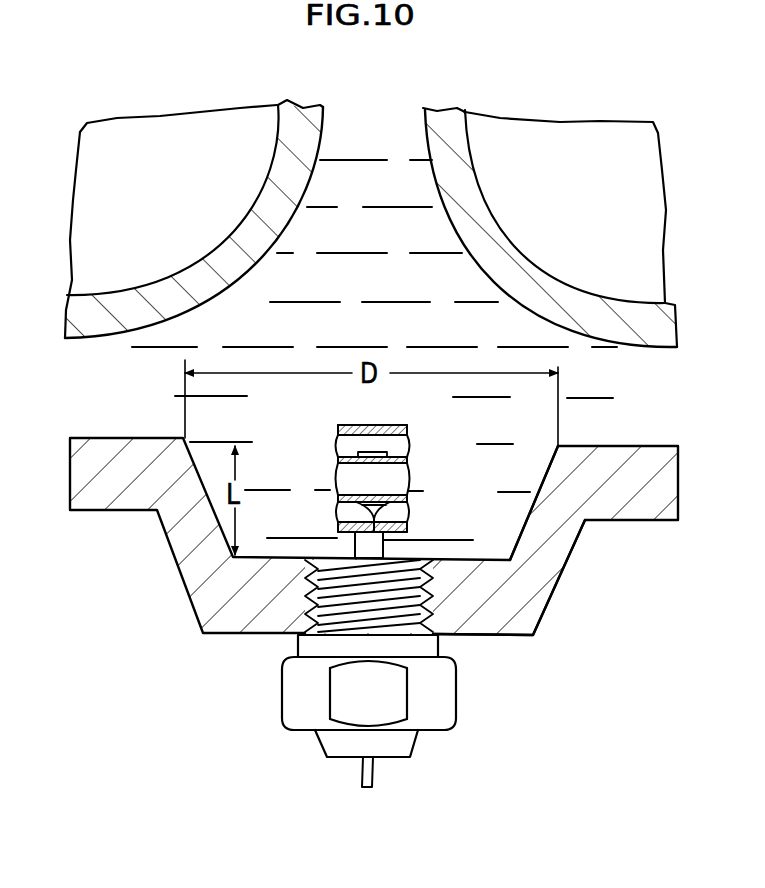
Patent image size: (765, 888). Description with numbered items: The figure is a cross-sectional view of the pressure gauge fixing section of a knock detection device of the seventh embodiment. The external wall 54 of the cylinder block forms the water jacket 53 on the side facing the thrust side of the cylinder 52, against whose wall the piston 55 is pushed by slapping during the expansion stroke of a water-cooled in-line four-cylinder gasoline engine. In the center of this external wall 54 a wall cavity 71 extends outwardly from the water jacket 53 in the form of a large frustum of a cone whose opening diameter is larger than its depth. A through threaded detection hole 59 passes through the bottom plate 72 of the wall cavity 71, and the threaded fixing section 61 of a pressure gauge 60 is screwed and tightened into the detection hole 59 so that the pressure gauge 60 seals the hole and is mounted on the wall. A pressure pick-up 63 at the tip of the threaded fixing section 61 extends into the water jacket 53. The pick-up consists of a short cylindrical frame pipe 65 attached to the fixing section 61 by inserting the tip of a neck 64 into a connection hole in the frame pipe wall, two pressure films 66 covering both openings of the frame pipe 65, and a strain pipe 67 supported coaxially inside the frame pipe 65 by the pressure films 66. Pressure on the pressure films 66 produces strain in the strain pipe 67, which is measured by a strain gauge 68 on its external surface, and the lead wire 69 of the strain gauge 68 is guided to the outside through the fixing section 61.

The cylinder 52 is at (423, 128).
The water jacket 53 is at (135, 368).
The external wall 54 is at (100, 513).
The piston 55 is at (202, 140).
The detection hole 59 is at (305, 612).
The pressure gauge 60 is at (460, 729).
The threaded fixing section 61 is at (440, 702).
The pressure pick-up 63 is at (398, 419).
The neck 64 is at (383, 543).
The frame pipe 65 is at (342, 425).
The pressure films 66 is at (338, 448).
The strain pipe 67 is at (407, 457).
The strain gauge 68 is at (368, 452).
The lead wire 69 is at (407, 513).
The wall cavity 71 is at (540, 490).
The bottom plate 72 is at (503, 617).